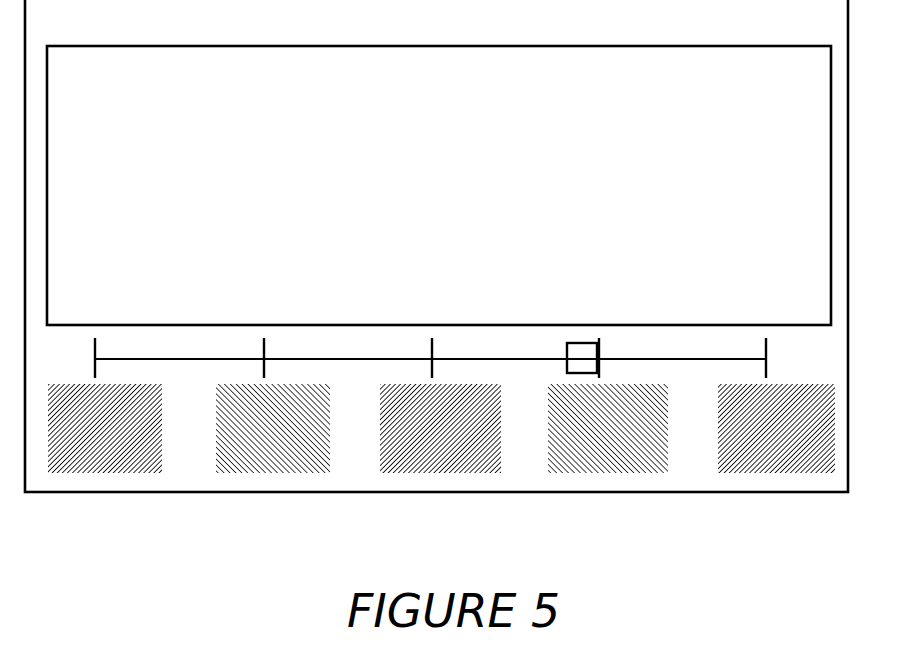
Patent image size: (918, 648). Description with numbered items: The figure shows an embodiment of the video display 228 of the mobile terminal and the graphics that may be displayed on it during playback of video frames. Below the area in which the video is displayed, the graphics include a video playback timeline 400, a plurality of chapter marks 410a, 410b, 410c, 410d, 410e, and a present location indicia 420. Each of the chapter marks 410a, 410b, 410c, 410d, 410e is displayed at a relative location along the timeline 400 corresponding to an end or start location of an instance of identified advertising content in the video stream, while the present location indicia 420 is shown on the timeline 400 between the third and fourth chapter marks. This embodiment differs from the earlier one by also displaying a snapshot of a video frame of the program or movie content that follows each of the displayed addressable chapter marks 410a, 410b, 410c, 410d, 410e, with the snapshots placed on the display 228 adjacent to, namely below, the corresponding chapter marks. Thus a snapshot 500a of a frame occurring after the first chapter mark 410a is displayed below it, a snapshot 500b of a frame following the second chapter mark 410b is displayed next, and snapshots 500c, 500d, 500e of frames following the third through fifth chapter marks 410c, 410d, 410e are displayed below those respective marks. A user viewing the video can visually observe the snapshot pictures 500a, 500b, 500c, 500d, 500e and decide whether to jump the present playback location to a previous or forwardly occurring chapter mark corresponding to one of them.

The video display 228 is at (436, 246).
The video playback timeline 400 is at (218, 358).
The first chapter mark 410a is at (95, 352).
The second chapter mark 410b is at (264, 352).
The third chapter mark 410c is at (432, 352).
The fourth chapter mark 410d is at (599, 351).
The fifth chapter mark 410e is at (767, 346).
The present location indicia 420 is at (567, 361).
The snapshot 500a is at (95, 468).
The snapshot 500b is at (258, 468).
The snapshot 500c is at (428, 468).
The snapshot 500d is at (595, 472).
The snapshot 500e is at (757, 472).